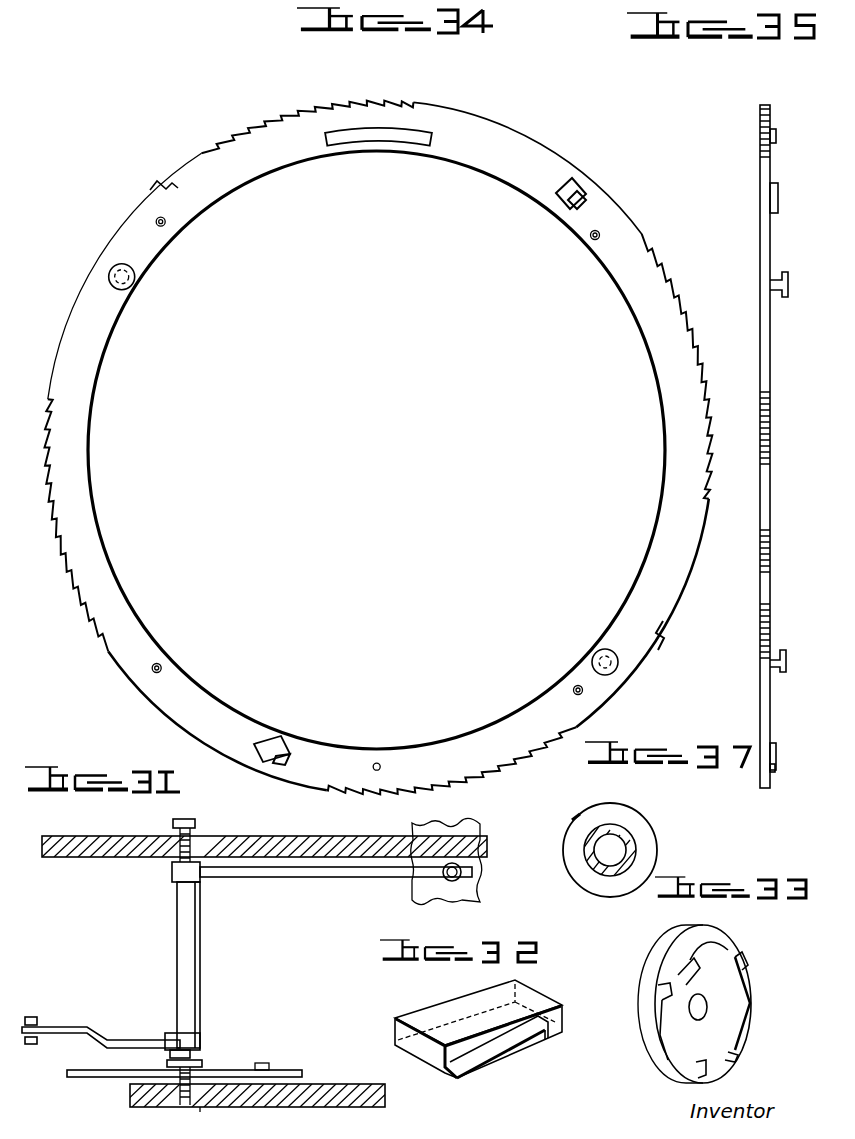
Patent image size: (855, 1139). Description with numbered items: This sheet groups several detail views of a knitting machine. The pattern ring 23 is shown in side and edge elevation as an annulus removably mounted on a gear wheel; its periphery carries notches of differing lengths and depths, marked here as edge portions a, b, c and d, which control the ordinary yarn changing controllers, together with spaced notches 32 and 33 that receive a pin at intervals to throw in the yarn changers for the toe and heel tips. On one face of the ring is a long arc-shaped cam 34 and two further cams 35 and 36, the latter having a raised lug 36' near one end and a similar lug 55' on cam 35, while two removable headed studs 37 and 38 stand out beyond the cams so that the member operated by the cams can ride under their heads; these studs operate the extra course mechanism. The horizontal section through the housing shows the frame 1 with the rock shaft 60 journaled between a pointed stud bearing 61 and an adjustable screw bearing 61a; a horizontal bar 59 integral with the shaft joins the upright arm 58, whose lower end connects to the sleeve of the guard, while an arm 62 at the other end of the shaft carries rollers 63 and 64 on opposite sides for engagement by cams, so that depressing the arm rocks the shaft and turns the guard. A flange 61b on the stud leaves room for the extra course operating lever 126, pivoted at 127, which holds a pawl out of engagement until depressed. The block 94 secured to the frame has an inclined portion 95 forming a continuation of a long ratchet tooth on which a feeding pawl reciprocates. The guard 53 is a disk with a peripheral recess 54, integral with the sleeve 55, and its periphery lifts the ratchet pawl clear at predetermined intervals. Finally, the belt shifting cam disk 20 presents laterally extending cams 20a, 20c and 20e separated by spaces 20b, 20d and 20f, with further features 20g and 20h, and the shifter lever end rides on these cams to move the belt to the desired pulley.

In FIG. 34, the pattern ring 23 is at (113, 597).
In FIG. 34, the notch 32 is at (153, 184).
In FIG. 34, the notch 33 is at (662, 636).
In FIG. 34, the arc-shaped cam 34 is at (388, 130).
In FIG. 35, the arc-shaped cam 34 is at (776, 134).
In FIG. 34, the cam 35 is at (569, 200).
In FIG. 35, the cam 35 is at (778, 205).
In FIG. 34, the lug 55' is at (600, 180).
In FIG. 34, the cam 36 is at (288, 731).
In FIG. 35, the cam 36 is at (790, 745).
In FIG. 34, the raised portion or lug 36' is at (272, 785).
In FIG. 35, the raised portion or lug 36' is at (789, 784).
In FIG. 34, the headed stud or screw 37 is at (128, 282).
In FIG. 35, the headed stud or screw 37 is at (786, 276).
In FIG. 34, the headed stud or screw 38 is at (592, 659).
In FIG. 35, the headed stud or screw 38 is at (784, 655).
In FIG. 34, the smooth edge portion a is at (101, 244).
In FIG. 34, the tooth b is at (215, 150).
In FIG. 34, the tooth c is at (230, 140).
In FIG. 34, the tooth d is at (250, 130).
In FIG. 31, the frame 1 is at (345, 845).
In FIG. 31, the upright arm 58 is at (450, 882).
In FIG. 31, the horizontal bar 59 is at (358, 875).
In FIG. 31, the rock shaft 60 is at (188, 955).
In FIG. 31, the bearing or pointed stud 61 is at (192, 1052).
In FIG. 31, the bearing screw 61a is at (190, 800).
In FIG. 31, the flange 61b is at (166, 1063).
In FIG. 31, the arm 62 is at (95, 1030).
In FIG. 31, the roller 63 is at (30, 1044).
In FIG. 31, the roller 64 is at (30, 1016).
In FIG. 31, the extra course operating lever 126 is at (262, 1063).
In FIG. 31, the pivot 127 is at (200, 1110).
In FIG. 32, the block 94 is at (472, 1002).
In FIG. 32, the inclined portion 95 is at (497, 1048).
In FIG. 33, the guard disk 53 is at (636, 823).
In FIG. 33, the recess 54 is at (576, 810).
In FIG. 33, the sleeve 55 is at (607, 872).
In FIG. 37, the belt shifting cam disk 20 is at (752, 1005).
In FIG. 37, the cam 20a is at (748, 1032).
In FIG. 37, the space 20b is at (735, 1060).
In FIG. 37, the cam 20c is at (656, 1058).
In FIG. 37, the space 20d is at (660, 988).
In FIG. 37, the cam 20e is at (676, 968).
In FIG. 37, the space 20f is at (724, 948).
In FIG. 37, the cam notch 20g is at (745, 960).
In FIG. 37, the cam notch 20h is at (702, 1072).